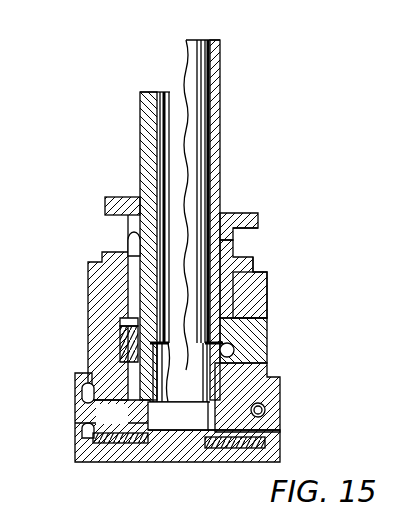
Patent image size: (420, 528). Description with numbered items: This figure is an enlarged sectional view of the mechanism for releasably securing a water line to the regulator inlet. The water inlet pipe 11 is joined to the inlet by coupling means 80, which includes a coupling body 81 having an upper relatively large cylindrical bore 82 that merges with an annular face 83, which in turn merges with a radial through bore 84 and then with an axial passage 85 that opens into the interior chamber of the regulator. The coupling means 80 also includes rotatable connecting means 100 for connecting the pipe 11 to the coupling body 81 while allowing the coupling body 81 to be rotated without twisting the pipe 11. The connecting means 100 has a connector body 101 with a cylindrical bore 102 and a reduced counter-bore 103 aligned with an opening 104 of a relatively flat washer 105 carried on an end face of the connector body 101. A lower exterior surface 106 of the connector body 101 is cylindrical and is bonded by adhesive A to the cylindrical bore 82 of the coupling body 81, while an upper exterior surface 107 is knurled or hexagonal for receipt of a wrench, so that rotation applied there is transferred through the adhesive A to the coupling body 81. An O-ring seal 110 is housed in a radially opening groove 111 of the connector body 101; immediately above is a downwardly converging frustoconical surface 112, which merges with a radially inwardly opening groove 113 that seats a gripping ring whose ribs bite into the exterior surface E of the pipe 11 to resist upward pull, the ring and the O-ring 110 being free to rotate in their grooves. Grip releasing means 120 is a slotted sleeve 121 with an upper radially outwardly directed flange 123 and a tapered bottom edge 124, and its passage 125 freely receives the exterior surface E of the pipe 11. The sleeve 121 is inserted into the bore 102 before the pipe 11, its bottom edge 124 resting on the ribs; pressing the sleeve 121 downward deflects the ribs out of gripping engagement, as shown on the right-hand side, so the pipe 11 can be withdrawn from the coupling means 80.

The water inlet pipe 11 is at (215, 119).
The exterior surface E is at (217, 197).
The grip releasing means 120 is at (100, 193).
The flange 123 is at (250, 222).
The passage 125 is at (138, 244).
The sleeve 121 is at (232, 246).
The rotatable connecting means 100 is at (312, 275).
The cylindrical bore 102 is at (263, 268).
The upper exterior surface 107 is at (92, 292).
The bottom edge 124 is at (258, 291).
The radially inwardly opening groove 113 is at (240, 328).
The frustoconical surface 112 is at (122, 322).
The connector body 101 is at (234, 352).
The radially opening groove 111 is at (118, 352).
The O-ring seal 110 is at (245, 364).
The cylindrical bore 82 is at (75, 385).
The lower exterior surface 106 is at (262, 404).
The adhesive A is at (266, 414).
The axial passage 85 is at (137, 432).
The opening 104 is at (157, 432).
The annular face 83 is at (82, 423).
The coupling means 80 is at (70, 465).
The radial through bore 84 is at (142, 460).
The counter-bore 103 is at (200, 450).
The washer 105 is at (237, 442).
The coupling body 81 is at (275, 447).